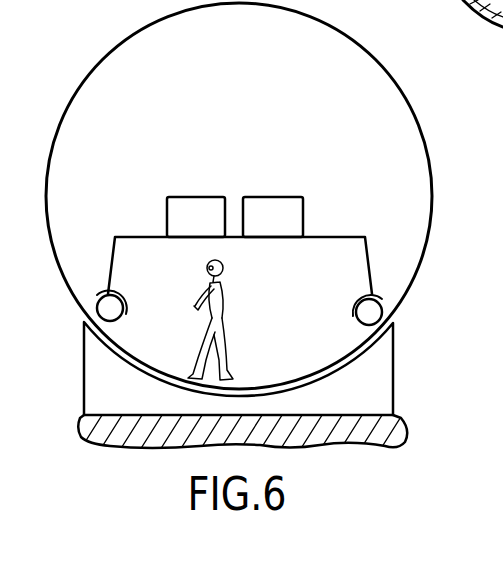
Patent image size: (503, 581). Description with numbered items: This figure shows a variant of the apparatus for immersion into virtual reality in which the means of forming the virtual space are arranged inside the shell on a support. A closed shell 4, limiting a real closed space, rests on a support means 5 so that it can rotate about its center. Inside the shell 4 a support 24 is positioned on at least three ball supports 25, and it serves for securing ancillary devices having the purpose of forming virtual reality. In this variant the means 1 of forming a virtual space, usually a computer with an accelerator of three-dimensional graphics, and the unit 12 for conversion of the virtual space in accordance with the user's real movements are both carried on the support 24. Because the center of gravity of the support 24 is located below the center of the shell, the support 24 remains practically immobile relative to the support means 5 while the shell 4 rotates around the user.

The closed shell 4 is at (422, 127).
The support means 5 is at (68, 348).
The support 24 is at (368, 263).
The ball supports 25 is at (105, 307).
The means of forming a virtual space 1 is at (187, 230).
The unit for conversion of the virtual space 12 is at (288, 230).